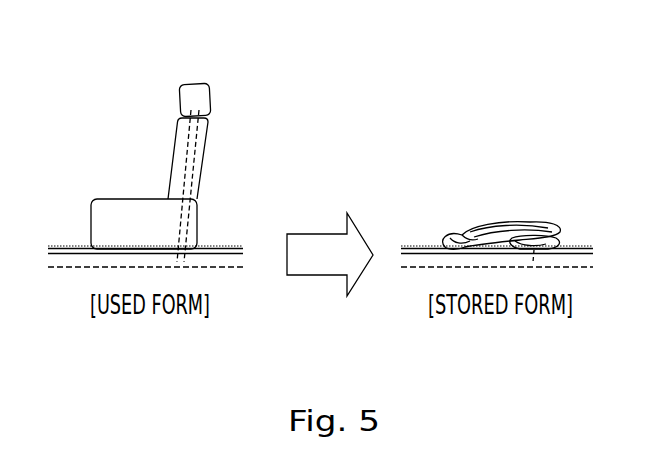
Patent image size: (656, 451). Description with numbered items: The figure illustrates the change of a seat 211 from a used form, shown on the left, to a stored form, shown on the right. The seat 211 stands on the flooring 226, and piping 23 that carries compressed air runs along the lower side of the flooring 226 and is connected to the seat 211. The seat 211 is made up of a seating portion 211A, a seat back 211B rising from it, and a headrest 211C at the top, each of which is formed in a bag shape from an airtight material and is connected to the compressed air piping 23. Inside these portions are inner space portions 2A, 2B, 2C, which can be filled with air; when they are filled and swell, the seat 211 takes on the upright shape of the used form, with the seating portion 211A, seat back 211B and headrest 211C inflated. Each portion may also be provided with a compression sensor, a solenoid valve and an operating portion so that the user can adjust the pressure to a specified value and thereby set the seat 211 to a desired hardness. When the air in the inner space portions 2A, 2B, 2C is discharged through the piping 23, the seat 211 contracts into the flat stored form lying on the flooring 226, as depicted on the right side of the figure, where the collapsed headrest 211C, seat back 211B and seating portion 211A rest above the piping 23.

The seat 211 is at (80, 116).
The inner space portion of seating portion 2A is at (120, 217).
The inner space portion of seat back 2B is at (177, 158).
The inner space portion of headrest 2C is at (189, 98).
The seating portion 211A is at (197, 222).
The seat back 211B is at (207, 147).
The headrest 211C is at (210, 100).
The piping 23 is at (195, 193).
The flooring 226 is at (58, 247).